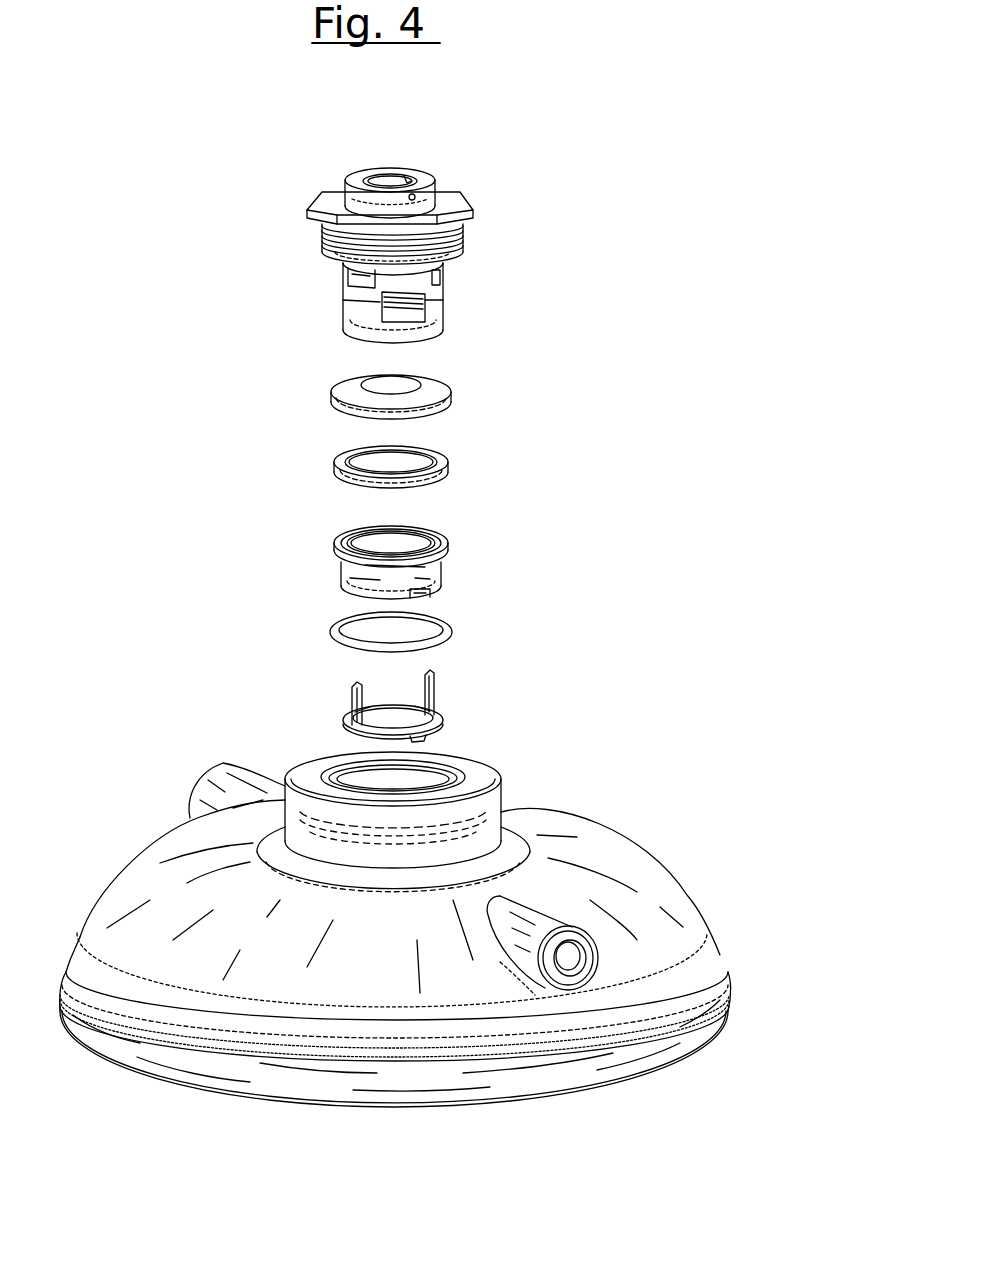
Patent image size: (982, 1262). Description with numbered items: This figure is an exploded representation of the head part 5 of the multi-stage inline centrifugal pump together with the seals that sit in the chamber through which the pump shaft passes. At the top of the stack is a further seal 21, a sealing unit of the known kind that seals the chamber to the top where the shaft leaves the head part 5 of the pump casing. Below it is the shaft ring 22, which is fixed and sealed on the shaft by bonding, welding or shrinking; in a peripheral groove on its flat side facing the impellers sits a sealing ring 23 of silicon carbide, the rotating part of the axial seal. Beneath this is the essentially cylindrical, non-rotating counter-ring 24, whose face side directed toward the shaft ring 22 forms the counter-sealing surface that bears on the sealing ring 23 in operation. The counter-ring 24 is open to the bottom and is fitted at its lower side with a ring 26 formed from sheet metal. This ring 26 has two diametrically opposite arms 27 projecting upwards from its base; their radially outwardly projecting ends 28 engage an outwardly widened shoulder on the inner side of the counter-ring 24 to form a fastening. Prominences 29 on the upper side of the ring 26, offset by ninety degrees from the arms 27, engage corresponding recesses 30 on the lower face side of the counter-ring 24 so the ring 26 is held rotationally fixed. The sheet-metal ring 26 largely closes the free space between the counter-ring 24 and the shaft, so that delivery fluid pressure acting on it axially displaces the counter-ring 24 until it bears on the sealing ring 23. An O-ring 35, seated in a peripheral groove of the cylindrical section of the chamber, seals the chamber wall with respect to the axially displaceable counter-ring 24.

The head part 5 is at (633, 855).
The seal 21 is at (474, 240).
The shaft ring 22 is at (433, 386).
The sealing ring 23 is at (450, 468).
The counter-ring 24 is at (447, 550).
The sheet-metal ring 26 is at (438, 727).
The arms 27 is at (434, 692).
The radially outwardly projecting ends 28 is at (352, 690).
The prominences 29 is at (423, 733).
The recesses 30 is at (425, 597).
The O-ring 35 is at (448, 640).